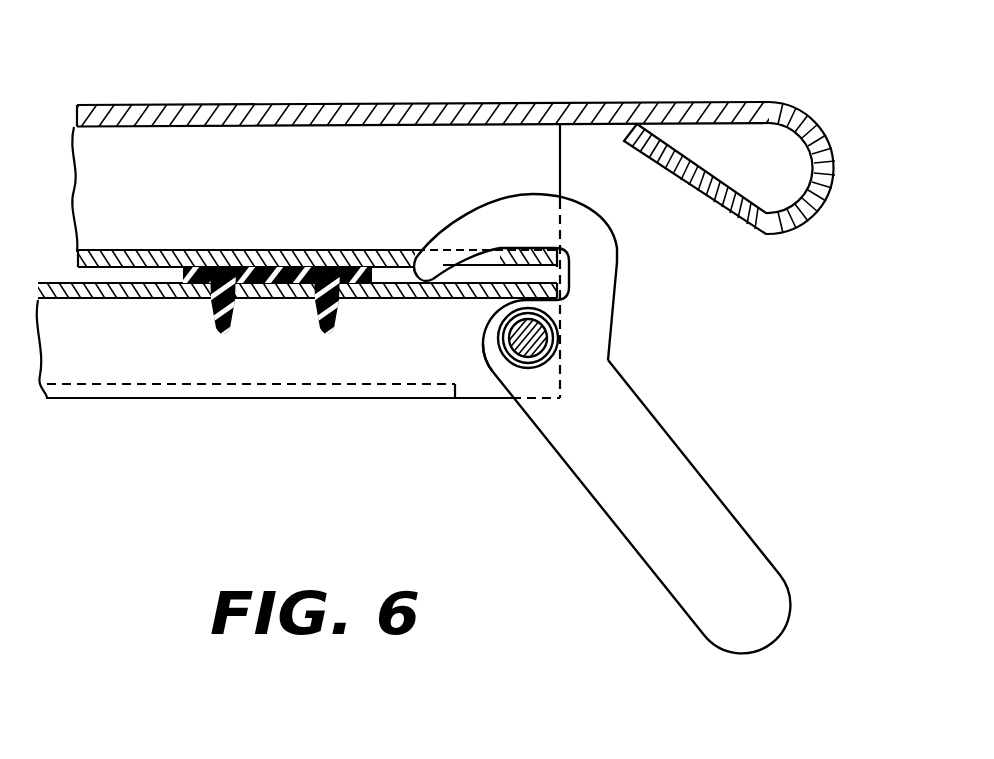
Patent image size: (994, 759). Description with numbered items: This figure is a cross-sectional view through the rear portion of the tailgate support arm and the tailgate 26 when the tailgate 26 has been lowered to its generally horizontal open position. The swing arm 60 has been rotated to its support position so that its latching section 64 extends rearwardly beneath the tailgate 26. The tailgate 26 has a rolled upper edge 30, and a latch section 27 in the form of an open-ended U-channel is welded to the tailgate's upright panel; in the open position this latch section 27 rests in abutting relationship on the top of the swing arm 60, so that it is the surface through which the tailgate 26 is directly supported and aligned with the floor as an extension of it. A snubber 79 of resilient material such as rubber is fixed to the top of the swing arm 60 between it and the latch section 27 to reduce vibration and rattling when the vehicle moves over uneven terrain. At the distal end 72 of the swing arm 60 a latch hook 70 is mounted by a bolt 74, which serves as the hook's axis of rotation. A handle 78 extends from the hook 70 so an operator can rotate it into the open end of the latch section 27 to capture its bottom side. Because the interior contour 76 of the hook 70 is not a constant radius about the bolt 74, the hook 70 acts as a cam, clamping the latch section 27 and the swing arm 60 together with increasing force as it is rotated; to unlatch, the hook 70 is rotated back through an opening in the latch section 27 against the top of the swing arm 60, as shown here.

The tailgate 26 is at (500, 101).
The rolled upper edge 30 is at (816, 123).
The latch section 27 is at (172, 249).
The snubber 79 is at (177, 276).
The swing arm 60 is at (190, 428).
The distal end 72 is at (473, 363).
The latch hook 70 is at (625, 414).
The interior contour 76 is at (517, 245).
The bolt 74 is at (540, 337).
The handle 78 is at (750, 554).
The latching section 64 is at (510, 418).